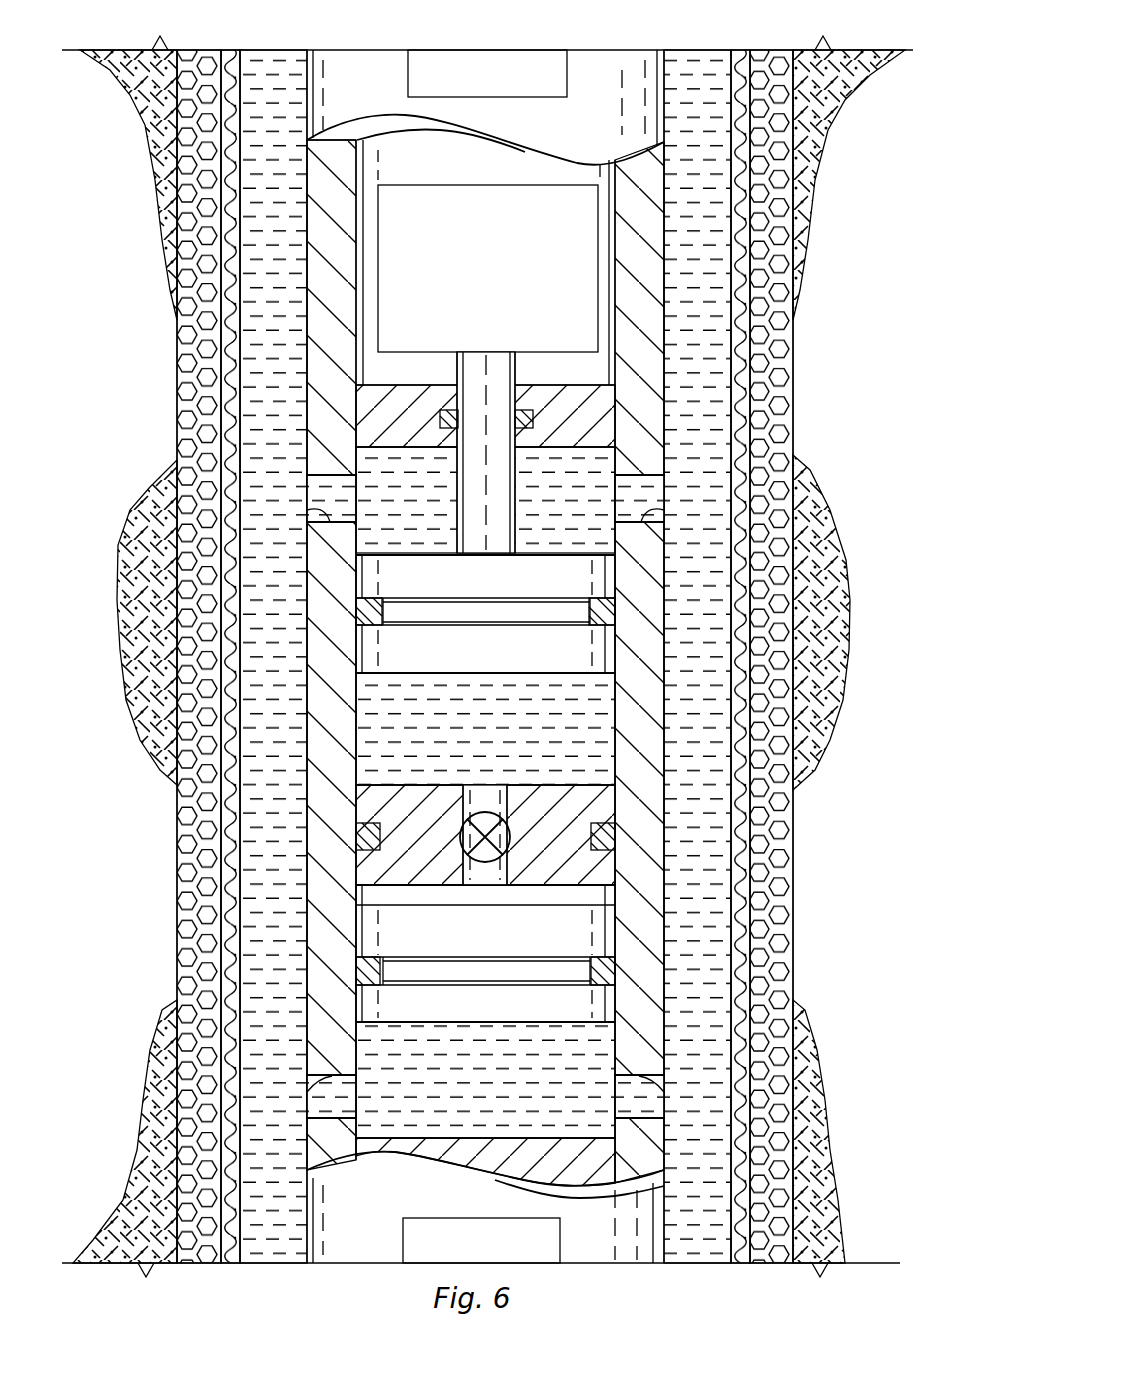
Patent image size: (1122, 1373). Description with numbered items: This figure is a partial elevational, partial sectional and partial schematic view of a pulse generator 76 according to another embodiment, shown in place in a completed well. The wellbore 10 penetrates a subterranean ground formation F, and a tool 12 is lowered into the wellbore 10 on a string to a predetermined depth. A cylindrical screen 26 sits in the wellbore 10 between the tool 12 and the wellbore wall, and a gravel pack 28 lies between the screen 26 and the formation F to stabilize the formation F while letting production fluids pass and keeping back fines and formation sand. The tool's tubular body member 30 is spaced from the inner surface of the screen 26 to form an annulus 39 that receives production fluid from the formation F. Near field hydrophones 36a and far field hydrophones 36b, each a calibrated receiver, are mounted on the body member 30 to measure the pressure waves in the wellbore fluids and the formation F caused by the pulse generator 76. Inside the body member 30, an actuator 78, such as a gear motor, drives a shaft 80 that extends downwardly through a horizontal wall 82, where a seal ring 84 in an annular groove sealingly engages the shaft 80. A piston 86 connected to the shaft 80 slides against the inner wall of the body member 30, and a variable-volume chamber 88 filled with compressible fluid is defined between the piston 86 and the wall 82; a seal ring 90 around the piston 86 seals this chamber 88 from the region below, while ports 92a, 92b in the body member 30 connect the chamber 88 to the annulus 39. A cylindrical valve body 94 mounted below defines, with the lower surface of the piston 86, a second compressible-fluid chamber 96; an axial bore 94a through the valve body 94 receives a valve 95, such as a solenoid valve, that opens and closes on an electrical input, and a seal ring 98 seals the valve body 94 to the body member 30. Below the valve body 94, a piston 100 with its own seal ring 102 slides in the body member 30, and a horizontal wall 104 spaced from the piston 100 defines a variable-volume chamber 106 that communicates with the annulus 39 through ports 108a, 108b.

The wellbore 10 is at (795, 75).
The tool 12 is at (300, 1248).
The cylindrical screen 26 is at (735, 75).
The gravel pack 28 is at (797, 350).
The tubular body member 30 is at (670, 368).
The near-field hydrophones 36a is at (404, 1240).
The far field hydrophones 36b is at (408, 72).
The annulus 39 is at (260, 368).
The pulse generator 76 is at (298, 855).
The actuator 78 is at (472, 269).
The shaft 80 is at (460, 362).
The horizontal wall 82 is at (556, 386).
The seal ring 84 is at (536, 418).
The piston 86 is at (414, 660).
The variable-volume chamber 88 is at (545, 519).
The seal ring 90 is at (592, 612).
The port 92a is at (660, 512).
The port 92b is at (325, 512).
The cylindrical valve body 94 is at (640, 800).
The axial bore 94a is at (508, 797).
The valve 95 is at (462, 840).
The variable volume chamber 96 is at (472, 744).
The seal ring 98 is at (616, 837).
The piston 100 is at (465, 945).
The seal ring 102 is at (616, 970).
The horizontal wall 104 is at (447, 1130).
The variable-volume chamber 106 is at (465, 1093).
The port 108a is at (658, 1095).
The port 108b is at (308, 1093).
The formation F is at (868, 647).